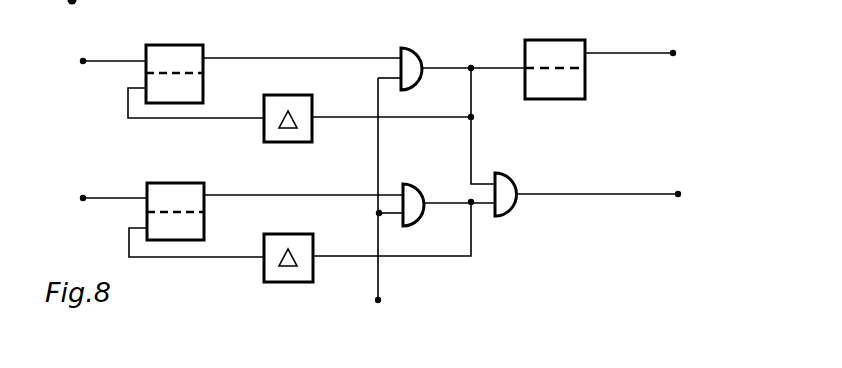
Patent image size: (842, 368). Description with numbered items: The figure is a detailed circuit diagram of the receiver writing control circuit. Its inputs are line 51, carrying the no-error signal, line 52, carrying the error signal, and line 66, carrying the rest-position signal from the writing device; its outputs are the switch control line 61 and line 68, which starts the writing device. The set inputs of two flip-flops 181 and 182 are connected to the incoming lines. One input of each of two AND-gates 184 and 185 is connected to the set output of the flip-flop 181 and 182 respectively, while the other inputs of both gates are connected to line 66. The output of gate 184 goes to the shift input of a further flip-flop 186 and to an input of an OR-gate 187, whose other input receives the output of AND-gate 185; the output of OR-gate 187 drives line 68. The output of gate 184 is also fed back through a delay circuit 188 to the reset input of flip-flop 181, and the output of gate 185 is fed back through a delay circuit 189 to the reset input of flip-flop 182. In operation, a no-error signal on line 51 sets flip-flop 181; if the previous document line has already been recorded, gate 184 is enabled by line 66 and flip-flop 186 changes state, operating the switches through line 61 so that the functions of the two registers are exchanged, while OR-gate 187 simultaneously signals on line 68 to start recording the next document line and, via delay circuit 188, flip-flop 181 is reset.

The line 51 is at (97, 61).
The line 52 is at (98, 199).
The line 61 is at (646, 55).
The line 66 is at (376, 206).
The line 68 is at (614, 196).
The flip-flop 181 is at (167, 45).
The flip-flop 182 is at (190, 183).
The AND-gate 184 is at (443, 41).
The AND-gate 185 is at (425, 189).
The flip-flop 186 is at (550, 40).
The OR-gate 187 is at (517, 186).
The delay circuit 188 is at (284, 95).
The delay circuit 189 is at (275, 234).